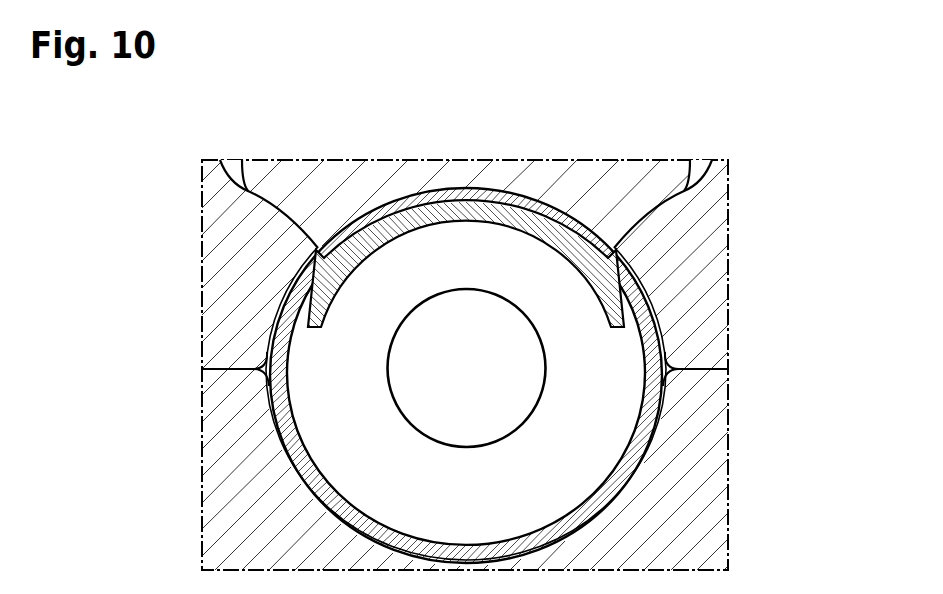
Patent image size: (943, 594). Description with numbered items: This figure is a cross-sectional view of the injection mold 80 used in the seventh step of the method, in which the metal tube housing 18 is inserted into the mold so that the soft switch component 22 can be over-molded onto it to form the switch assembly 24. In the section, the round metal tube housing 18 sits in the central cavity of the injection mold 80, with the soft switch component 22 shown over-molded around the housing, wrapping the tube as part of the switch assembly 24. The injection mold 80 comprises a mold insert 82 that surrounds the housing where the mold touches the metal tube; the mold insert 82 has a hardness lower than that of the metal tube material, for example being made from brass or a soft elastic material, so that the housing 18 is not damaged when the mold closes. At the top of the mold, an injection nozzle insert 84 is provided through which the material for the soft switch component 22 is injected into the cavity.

The metal tube housing 18 is at (637, 453).
The soft switch component 22 is at (429, 190).
The switch assembly 24 is at (484, 210).
The injection mold 80 is at (745, 155).
The mold insert 82 is at (703, 312).
The injection nozzle insert 84 is at (593, 196).